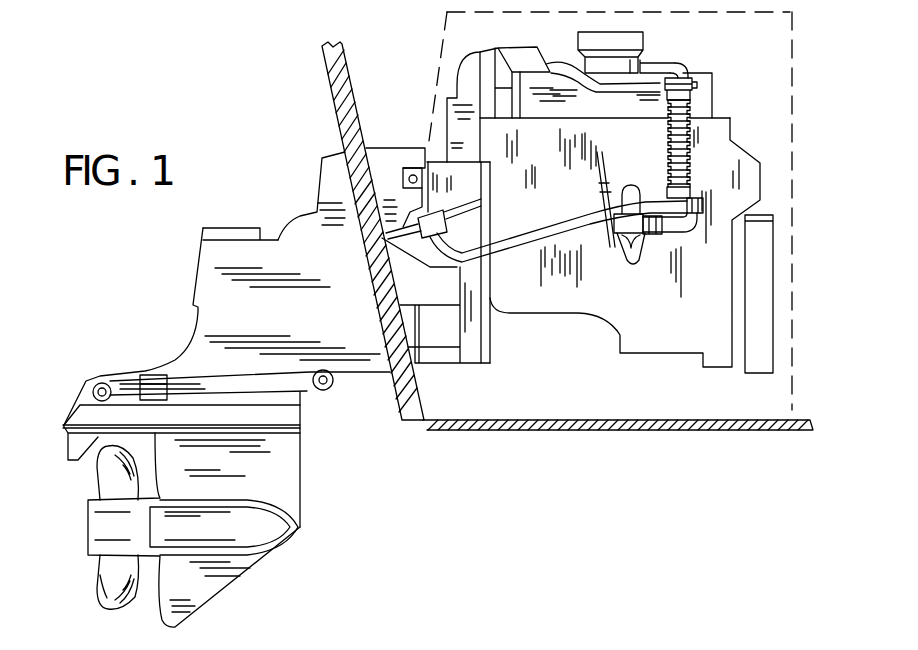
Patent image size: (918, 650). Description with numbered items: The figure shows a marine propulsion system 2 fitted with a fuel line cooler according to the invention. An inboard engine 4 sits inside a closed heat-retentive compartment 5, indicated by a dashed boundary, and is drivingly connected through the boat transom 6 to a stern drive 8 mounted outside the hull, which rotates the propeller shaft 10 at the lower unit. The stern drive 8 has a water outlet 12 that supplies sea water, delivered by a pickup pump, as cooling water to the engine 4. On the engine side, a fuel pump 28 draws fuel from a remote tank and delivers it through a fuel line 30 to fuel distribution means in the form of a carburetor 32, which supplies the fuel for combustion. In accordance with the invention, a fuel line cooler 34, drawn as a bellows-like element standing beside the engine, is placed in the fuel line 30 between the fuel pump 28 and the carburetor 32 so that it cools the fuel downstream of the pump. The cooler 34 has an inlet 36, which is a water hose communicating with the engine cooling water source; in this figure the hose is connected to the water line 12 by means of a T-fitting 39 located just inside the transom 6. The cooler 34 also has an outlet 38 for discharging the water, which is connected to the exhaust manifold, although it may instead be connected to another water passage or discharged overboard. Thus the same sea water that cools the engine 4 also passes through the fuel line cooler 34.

The marine propulsion system 2 is at (403, 21).
The inboard engine 4 is at (720, 123).
The closed heat-retentive compartment 5 is at (793, 20).
The boat transom 6 is at (333, 63).
The stern drive 8 is at (297, 226).
The propeller shaft 10 is at (101, 592).
The water outlet 12 is at (402, 227).
The fuel pump 28 is at (633, 267).
The fuel line 30 is at (680, 60).
The carburetor 32 is at (612, 57).
The fuel line cooler 34 is at (703, 168).
The inlet 36 is at (580, 218).
The outlet 38 is at (580, 90).
The T-fitting 39 is at (442, 211).